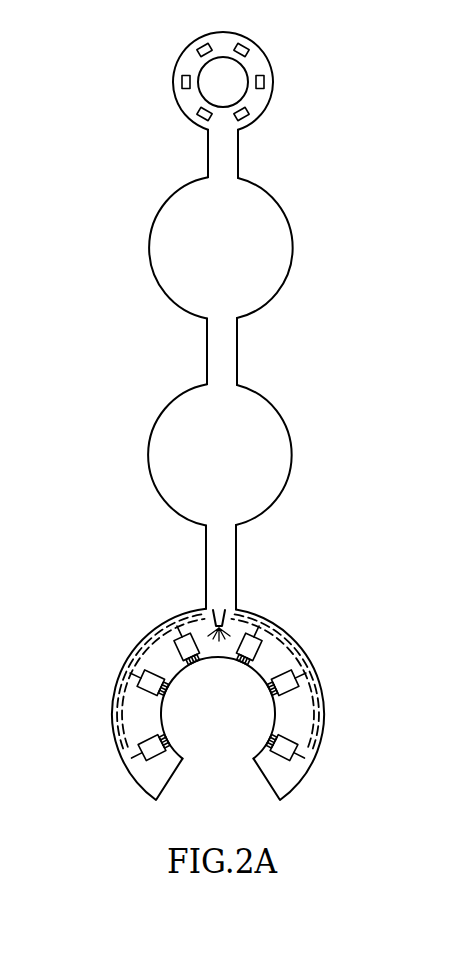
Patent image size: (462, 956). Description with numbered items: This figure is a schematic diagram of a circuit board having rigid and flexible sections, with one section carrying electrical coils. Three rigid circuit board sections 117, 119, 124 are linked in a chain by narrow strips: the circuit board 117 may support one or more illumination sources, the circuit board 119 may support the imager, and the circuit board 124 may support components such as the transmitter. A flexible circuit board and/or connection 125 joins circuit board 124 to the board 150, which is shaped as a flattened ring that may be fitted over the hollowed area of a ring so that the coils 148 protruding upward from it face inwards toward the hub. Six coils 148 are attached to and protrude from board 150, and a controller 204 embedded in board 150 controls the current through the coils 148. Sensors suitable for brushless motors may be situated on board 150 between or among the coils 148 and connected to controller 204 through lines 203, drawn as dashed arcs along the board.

The rigid circuit board section 117 is at (272, 62).
The rigid circuit board section 119 is at (293, 245).
The rigid circuit board section 124 is at (292, 455).
The flexible circuit board connection 125 is at (237, 543).
The controller 204 is at (237, 610).
The lines 203 is at (115, 712).
The flexible circuit board 150 is at (323, 700).
The coils 148 is at (253, 762).